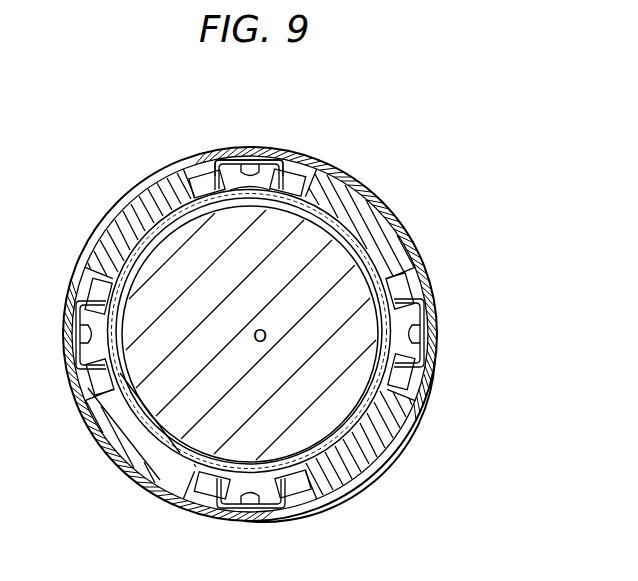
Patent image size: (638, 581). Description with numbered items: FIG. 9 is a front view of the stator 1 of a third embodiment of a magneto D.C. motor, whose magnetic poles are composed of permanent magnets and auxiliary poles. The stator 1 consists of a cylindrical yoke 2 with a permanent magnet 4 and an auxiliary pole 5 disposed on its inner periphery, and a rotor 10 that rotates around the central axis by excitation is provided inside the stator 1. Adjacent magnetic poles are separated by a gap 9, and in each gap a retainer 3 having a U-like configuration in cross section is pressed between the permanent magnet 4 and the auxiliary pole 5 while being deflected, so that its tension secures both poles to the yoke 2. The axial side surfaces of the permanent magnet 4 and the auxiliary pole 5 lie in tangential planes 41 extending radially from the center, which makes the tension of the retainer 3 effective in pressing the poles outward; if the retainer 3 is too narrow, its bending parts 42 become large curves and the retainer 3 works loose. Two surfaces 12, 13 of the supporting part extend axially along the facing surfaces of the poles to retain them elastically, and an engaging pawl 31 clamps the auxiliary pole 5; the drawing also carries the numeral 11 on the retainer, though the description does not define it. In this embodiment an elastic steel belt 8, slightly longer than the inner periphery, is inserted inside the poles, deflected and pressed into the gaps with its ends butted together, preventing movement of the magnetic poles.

The stator 1 is at (142, 195).
The yoke 2 is at (105, 452).
The retainer 3 is at (222, 158).
The permanent magnet 4 is at (383, 242).
The auxiliary pole 5 is at (312, 170).
The elastic steel belt 8 is at (345, 303).
The gap 9 is at (277, 162).
The rotor 10 is at (350, 222).
The middle portion of spring 11 is at (249, 176).
The surface 12 is at (218, 198).
The surface 13 is at (265, 200).
The engaging pawl 31 is at (205, 172).
The tangential plane 41 is at (180, 498).
The bending part 42 is at (247, 200).